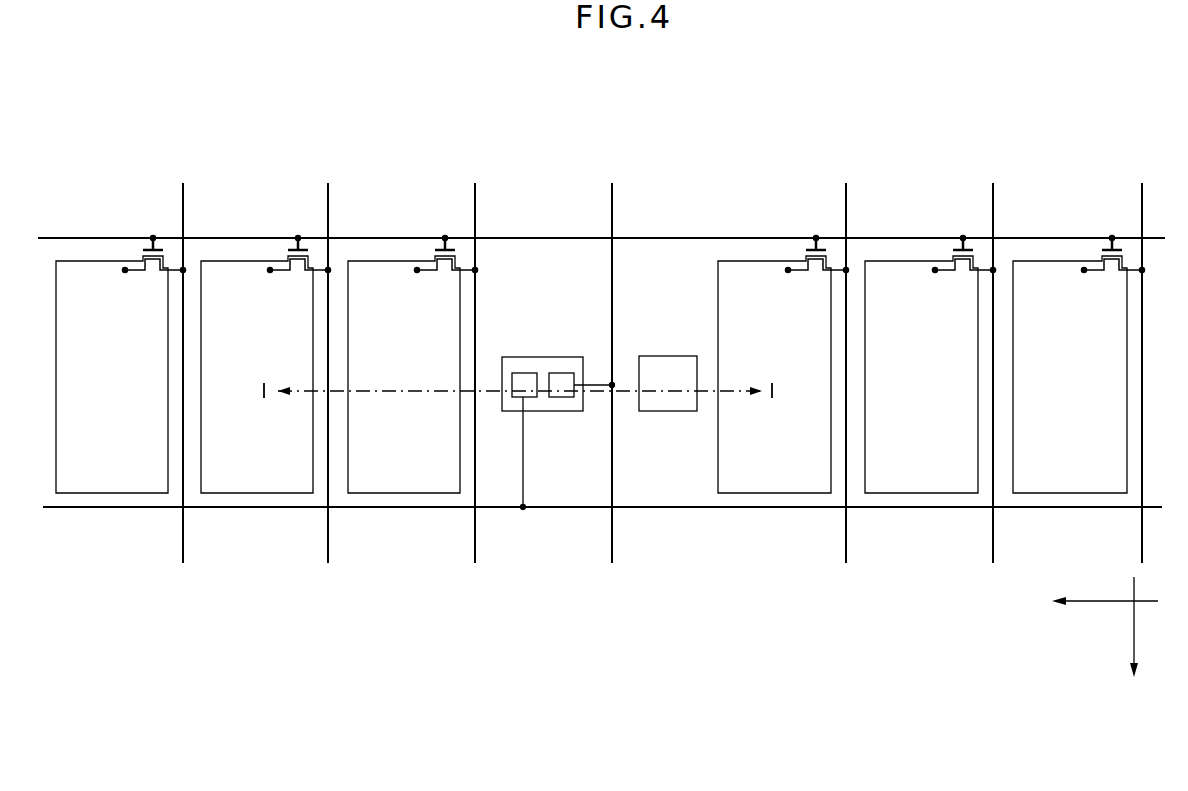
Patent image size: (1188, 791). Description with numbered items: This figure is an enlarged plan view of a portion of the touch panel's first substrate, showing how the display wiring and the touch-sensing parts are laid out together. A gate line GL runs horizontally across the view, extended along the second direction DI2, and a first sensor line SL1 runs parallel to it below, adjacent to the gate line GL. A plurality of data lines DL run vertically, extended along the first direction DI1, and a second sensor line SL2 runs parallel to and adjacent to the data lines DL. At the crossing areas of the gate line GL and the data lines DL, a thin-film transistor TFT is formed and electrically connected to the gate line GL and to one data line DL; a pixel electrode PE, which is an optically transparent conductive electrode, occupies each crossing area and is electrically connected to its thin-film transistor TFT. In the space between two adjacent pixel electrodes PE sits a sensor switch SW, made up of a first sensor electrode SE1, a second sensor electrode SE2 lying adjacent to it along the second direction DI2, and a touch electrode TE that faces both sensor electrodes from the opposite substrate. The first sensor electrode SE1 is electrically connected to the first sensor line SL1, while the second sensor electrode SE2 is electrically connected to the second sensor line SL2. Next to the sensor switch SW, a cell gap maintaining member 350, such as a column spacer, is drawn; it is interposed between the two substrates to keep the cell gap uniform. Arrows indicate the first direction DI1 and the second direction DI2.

The gate line GL is at (912, 232).
The data line DL is at (997, 195).
The first sensor line SL1 is at (662, 510).
The second sensor line SL2 is at (616, 200).
The pixel electrode PE is at (410, 478).
The thin-film transistor TFT is at (430, 256).
The sensor switch SW is at (550, 385).
The touch electrode TE is at (541, 357).
The first sensor electrode SE1 is at (523, 373).
The second sensor electrode SE2 is at (582, 347).
The cell gap maintaining member 350 is at (666, 356).
The first direction DI1 is at (1136, 641).
The second direction DI2 is at (1083, 601).